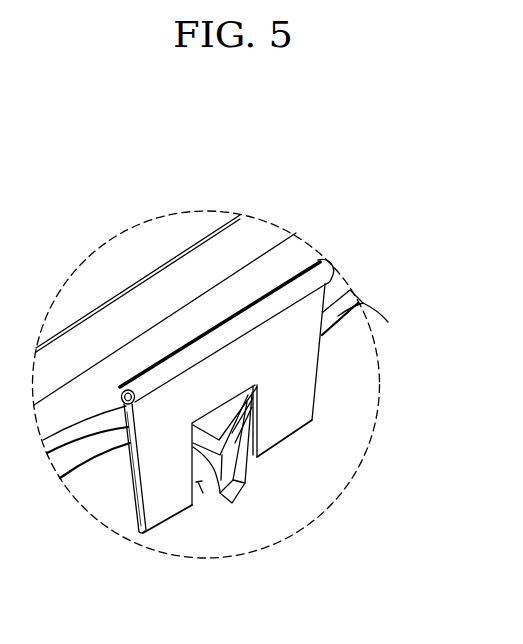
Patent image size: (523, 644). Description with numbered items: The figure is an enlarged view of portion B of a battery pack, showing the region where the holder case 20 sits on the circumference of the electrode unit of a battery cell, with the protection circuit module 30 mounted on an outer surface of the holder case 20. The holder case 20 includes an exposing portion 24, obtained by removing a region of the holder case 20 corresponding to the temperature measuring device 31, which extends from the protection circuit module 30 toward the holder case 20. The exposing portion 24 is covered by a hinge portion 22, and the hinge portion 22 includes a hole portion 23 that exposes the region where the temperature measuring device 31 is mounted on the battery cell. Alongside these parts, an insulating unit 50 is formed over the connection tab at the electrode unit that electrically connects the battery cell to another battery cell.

The holder case 20 is at (278, 258).
The hinge portion 22 is at (302, 367).
The hole portion 23 is at (229, 500).
The exposing portion 24 is at (322, 352).
The protection circuit module 30 is at (172, 227).
The temperature measuring device 31 is at (246, 411).
The insulating unit 50 is at (340, 315).
The portion B is at (338, 270).